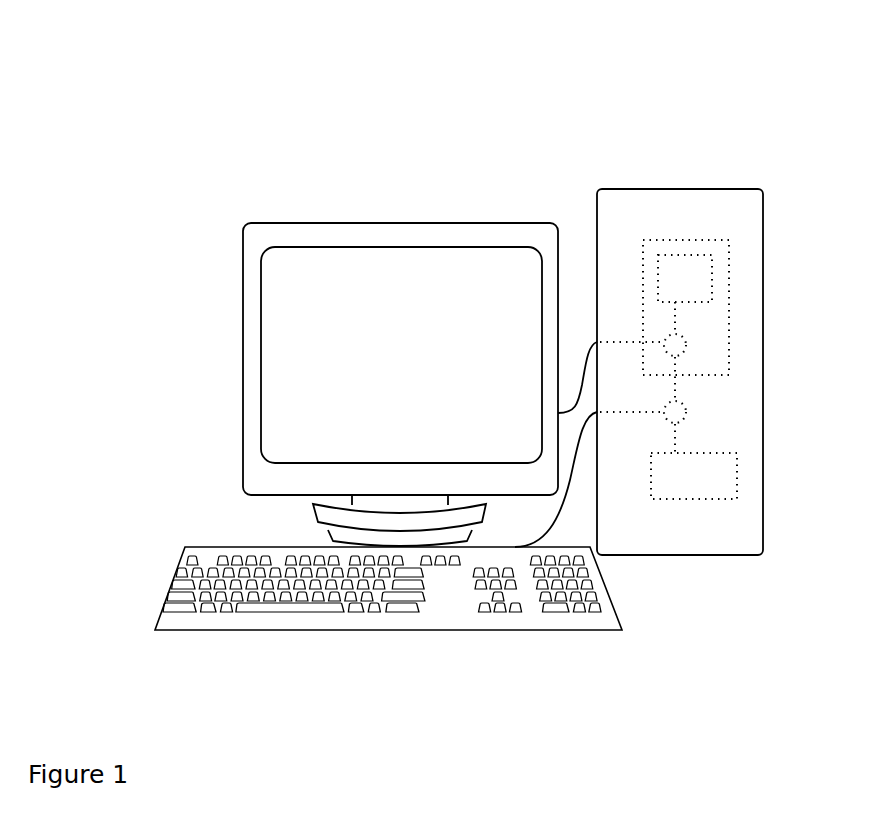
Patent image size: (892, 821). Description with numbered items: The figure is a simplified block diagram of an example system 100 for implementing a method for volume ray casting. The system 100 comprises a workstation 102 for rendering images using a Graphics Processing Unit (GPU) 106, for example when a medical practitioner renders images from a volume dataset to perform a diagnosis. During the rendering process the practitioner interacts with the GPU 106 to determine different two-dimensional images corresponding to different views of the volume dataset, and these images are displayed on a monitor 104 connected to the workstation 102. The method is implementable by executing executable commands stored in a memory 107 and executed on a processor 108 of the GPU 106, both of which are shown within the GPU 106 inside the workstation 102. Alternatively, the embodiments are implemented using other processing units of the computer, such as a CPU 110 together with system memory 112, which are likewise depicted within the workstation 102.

The system 100 is at (183, 97).
The workstation 102 is at (632, 189).
The monitor 104 is at (368, 287).
The Graphics Processing Unit (GPU) 106 is at (730, 240).
The memory 107 is at (712, 290).
The processor 108 is at (687, 343).
The CPU 110 is at (688, 413).
The system memory 112 is at (737, 490).